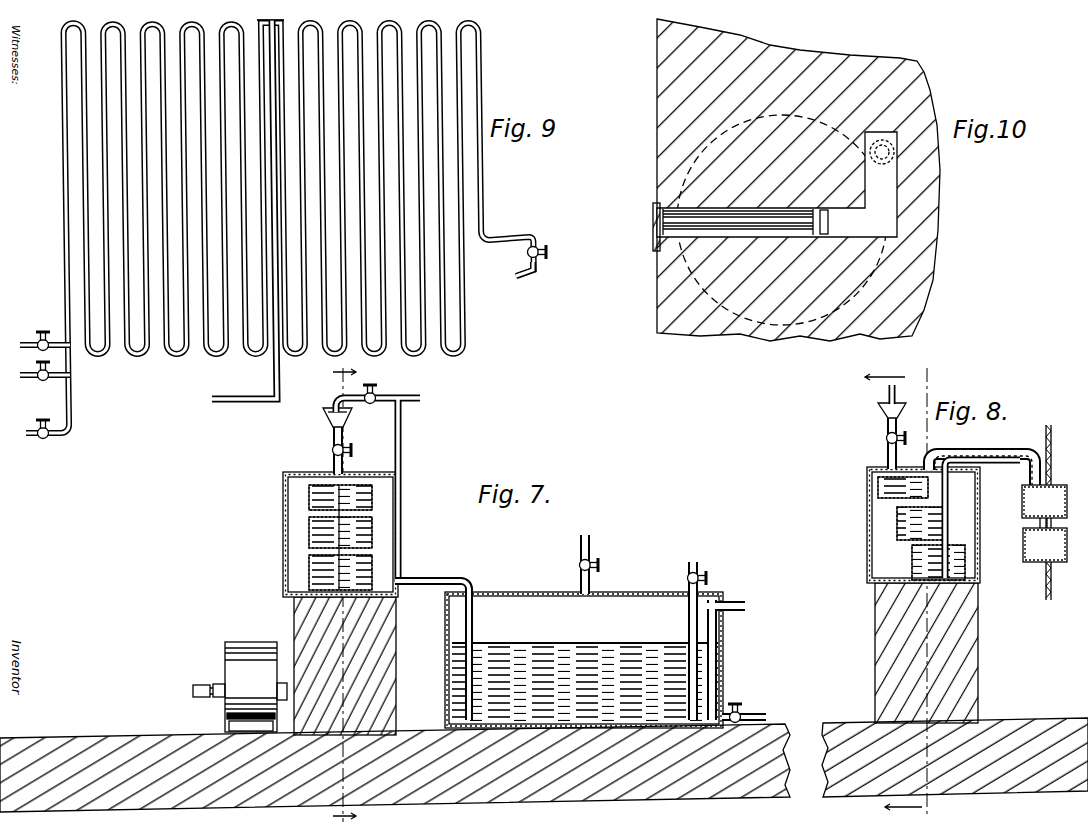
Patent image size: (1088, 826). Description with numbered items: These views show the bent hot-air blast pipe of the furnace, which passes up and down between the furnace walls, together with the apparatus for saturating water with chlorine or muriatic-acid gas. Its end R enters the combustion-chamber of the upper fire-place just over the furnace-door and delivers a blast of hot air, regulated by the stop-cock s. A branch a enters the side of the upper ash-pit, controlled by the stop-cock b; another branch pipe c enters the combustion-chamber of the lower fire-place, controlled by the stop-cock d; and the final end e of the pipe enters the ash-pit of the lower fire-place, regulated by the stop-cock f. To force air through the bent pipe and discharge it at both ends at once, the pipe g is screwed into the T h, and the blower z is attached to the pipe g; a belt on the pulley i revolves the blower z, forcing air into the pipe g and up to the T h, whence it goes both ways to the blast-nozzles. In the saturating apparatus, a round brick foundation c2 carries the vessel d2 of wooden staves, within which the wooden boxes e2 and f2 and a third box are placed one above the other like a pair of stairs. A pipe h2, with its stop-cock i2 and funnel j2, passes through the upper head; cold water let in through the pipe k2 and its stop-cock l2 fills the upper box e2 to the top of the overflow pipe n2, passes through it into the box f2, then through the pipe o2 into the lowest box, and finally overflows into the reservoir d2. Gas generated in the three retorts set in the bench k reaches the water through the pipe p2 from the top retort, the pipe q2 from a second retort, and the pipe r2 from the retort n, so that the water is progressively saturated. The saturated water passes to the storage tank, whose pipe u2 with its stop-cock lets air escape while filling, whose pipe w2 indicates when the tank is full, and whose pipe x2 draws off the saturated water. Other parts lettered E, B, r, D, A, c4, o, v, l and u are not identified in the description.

In FIG. 9, the blast pipe end R is at (158, 136).
In FIG. 9, the T h is at (275, 13).
In FIG. 9, the pipe g is at (248, 209).
In FIG. 9, the branch pipe a is at (36, 344).
In FIG. 9, the stop-cock b is at (43, 332).
In FIG. 9, the branch pipe c is at (38, 366).
In FIG. 9, the stop-cock d is at (36, 374).
In FIG. 9, the pipe end e is at (7, 431).
In FIG. 9, the stop-cock f is at (40, 422).
In FIG. 9, the stop-cock s is at (546, 251).
In FIG. 9, the outlet pipe u is at (533, 274).
In FIG. 7, the outlet pipe u is at (592, 562).
In FIG. 10, the bench k is at (798, 180).
In FIG. 10, the channel E is at (777, 184).
In FIG. 10, the grating B is at (738, 222).
In FIG. 10, the shaft r is at (882, 152).
In FIG. 10, the plate D is at (650, 227).
In FIG. 7, the ground base A is at (395, 768).
In FIG. 8, the ground base A is at (955, 757).
In FIG. 7, the pedestal c4 is at (345, 666).
In FIG. 8, the pedestal c4 is at (926, 653).
In FIG. 7, the blower z is at (250, 687).
In FIG. 7, the pulley i is at (203, 682).
In FIG. 7, the retort n is at (584, 660).
In FIG. 8, the retort n is at (1045, 545).
In FIG. 7, the round foundation c2 is at (340, 534).
In FIG. 8, the round foundation c2 is at (923, 525).
In FIG. 7, the vessel d2 is at (333, 511).
In FIG. 8, the vessel d2 is at (903, 525).
In FIG. 7, the upper box e2 is at (340, 532).
In FIG. 8, the upper box e2 is at (938, 562).
In FIG. 7, the box f2 is at (340, 537).
In FIG. 7, the pipe h2 is at (333, 468).
In FIG. 8, the pipe h2 is at (887, 462).
In FIG. 7, the stop-cock i2 is at (353, 448).
In FIG. 8, the stop-cock i2 is at (904, 438).
In FIG. 7, the funnel j2 is at (342, 420).
In FIG. 8, the funnel j2 is at (897, 408).
In FIG. 7, the pipe k2 is at (378, 481).
In FIG. 8, the pipe k2 is at (900, 391).
In FIG. 7, the stop-cock l2 is at (375, 387).
In FIG. 8, the stop-cock l2 is at (922, 522).
In FIG. 7, the discharge pipe o is at (432, 643).
In FIG. 7, the pipe v is at (687, 641).
In FIG. 7, the pipe w2 is at (735, 656).
In FIG. 7, the pipe x2 is at (744, 707).
In FIG. 8, the overflow pipe n2 is at (982, 459).
In FIG. 8, the pipe q2 is at (983, 466).
In FIG. 8, the pipe p2 is at (982, 519).
In FIG. 8, the pipe r2 is at (1035, 524).
In FIG. 8, the pipe o2 is at (1006, 512).
In FIG. 8, the box l is at (1044, 501).
In FIG. 8, the pipe u2 is at (942, 495).